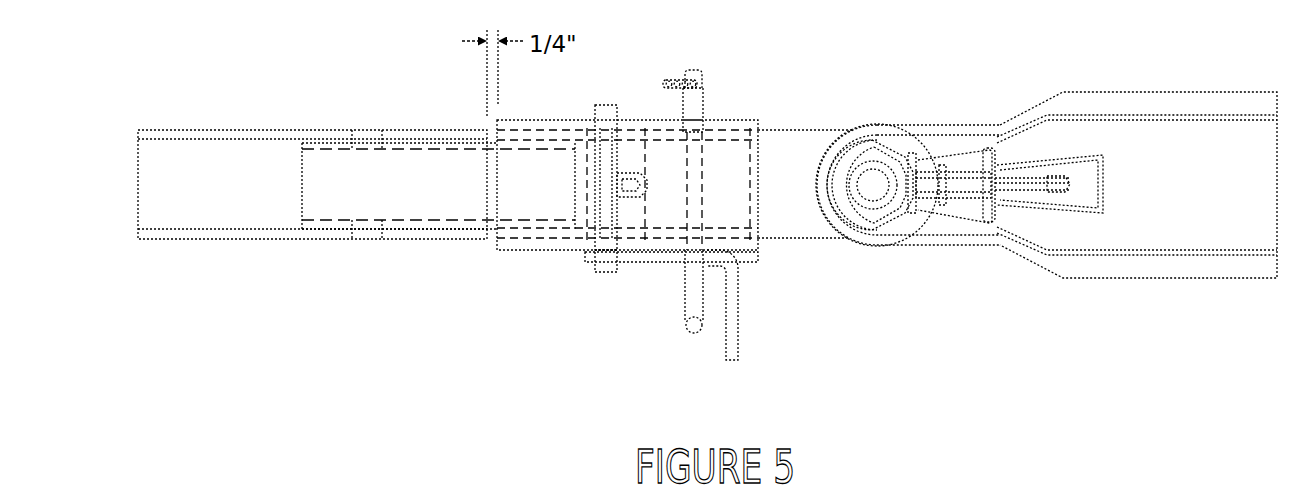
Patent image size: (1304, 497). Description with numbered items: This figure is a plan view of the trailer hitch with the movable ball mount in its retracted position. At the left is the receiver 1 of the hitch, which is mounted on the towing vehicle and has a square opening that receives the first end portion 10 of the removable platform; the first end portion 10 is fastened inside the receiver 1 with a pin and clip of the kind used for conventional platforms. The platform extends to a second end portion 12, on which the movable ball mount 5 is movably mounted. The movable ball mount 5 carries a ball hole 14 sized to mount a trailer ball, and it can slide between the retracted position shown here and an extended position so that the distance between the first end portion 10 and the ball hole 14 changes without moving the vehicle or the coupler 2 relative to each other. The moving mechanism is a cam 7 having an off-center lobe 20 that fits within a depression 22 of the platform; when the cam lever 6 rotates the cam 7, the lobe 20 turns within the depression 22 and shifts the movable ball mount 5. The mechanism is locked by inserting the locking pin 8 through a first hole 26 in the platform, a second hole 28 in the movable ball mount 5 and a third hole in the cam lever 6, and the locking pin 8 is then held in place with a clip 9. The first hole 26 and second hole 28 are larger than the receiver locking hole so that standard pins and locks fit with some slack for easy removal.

The receiver 1 is at (191, 129).
The coupler 2 is at (1180, 91).
The movable ball mount 5 is at (796, 129).
The cam lever 6 is at (742, 303).
The cam 7 is at (605, 274).
The locking pin 8 is at (684, 298).
The clip 9 is at (671, 77).
The first end portion 10 is at (382, 142).
The second end portion 12 is at (529, 128).
The ball hole 14 is at (881, 158).
The off-center lobe 20 is at (640, 207).
The depression 22 is at (605, 131).
The first hole 26 is at (703, 138).
The second hole 28 is at (702, 120).